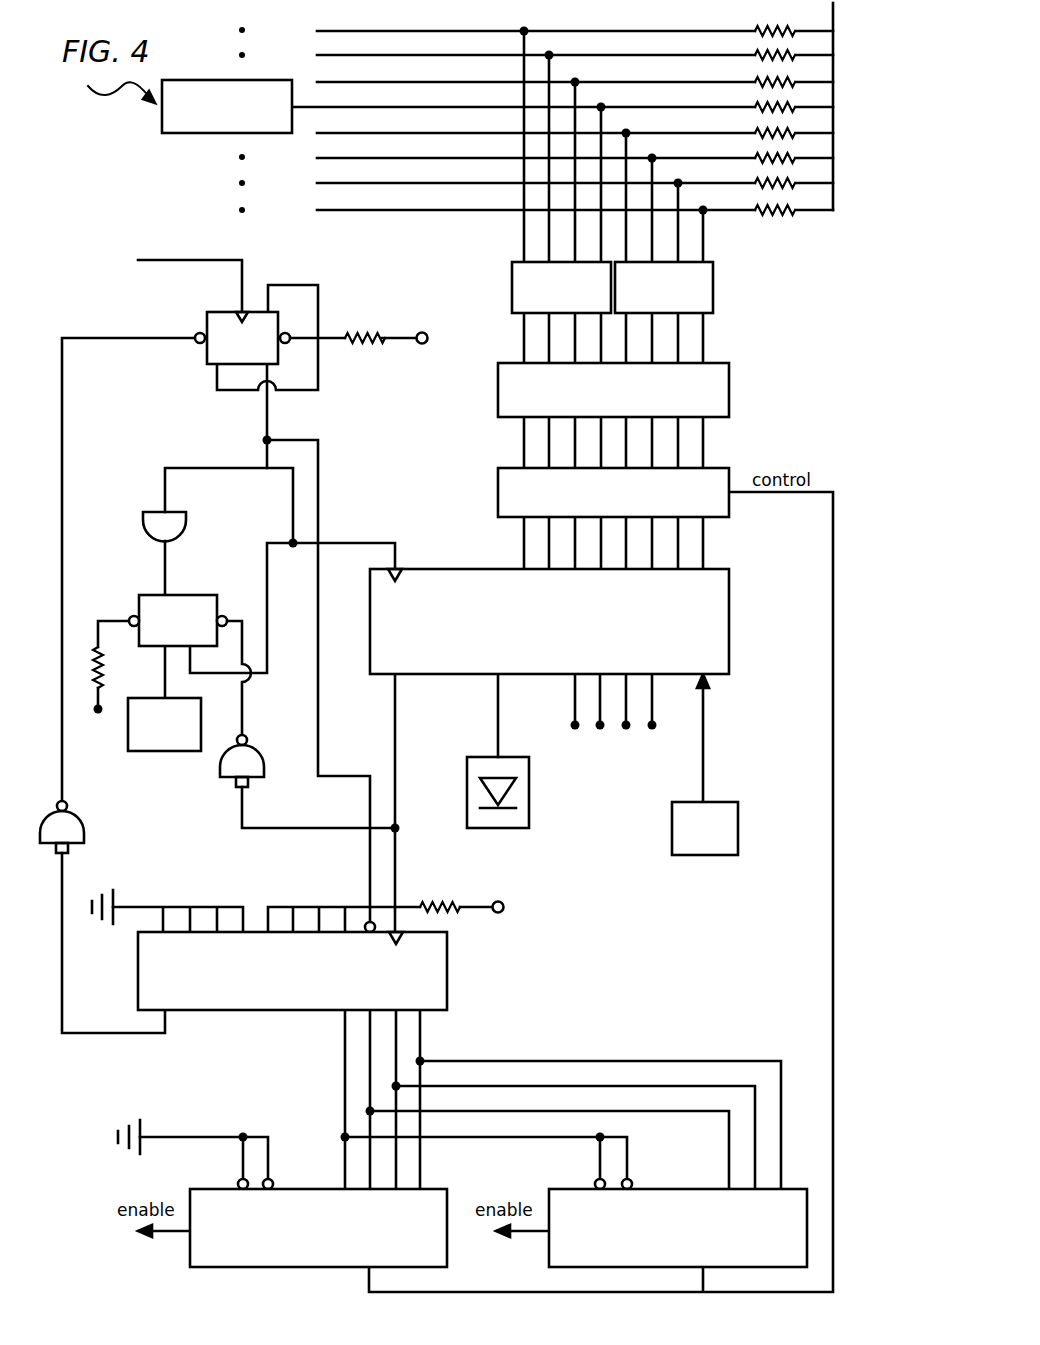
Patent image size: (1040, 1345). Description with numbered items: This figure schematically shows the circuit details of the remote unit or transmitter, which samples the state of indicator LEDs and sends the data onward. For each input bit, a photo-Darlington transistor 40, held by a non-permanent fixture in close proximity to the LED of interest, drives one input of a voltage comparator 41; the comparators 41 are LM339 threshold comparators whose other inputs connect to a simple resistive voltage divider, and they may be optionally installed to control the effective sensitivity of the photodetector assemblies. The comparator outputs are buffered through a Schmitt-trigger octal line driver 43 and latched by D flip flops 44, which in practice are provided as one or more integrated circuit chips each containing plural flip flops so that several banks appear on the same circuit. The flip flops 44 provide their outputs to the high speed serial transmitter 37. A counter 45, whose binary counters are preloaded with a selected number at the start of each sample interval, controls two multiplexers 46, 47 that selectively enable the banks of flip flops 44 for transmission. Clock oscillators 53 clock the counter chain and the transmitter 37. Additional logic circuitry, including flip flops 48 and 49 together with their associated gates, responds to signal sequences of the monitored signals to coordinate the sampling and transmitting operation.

The high speed transmitter 37 is at (696, 666).
The photo-Darlington transistor 40 is at (210, 133).
The voltage comparator 41 is at (715, 297).
The line driver 43 is at (700, 409).
The D flip-flop 44 is at (700, 513).
The counter 45 is at (400, 997).
The multiplexer 46 is at (412, 1261).
The multiplexer 47 is at (773, 1261).
The flip flop 48 is at (229, 355).
The flip flop 49 is at (165, 633).
The clock oscillator 53 is at (165, 751).